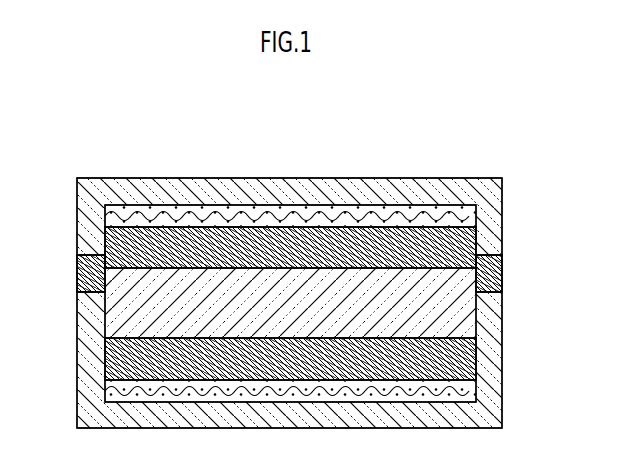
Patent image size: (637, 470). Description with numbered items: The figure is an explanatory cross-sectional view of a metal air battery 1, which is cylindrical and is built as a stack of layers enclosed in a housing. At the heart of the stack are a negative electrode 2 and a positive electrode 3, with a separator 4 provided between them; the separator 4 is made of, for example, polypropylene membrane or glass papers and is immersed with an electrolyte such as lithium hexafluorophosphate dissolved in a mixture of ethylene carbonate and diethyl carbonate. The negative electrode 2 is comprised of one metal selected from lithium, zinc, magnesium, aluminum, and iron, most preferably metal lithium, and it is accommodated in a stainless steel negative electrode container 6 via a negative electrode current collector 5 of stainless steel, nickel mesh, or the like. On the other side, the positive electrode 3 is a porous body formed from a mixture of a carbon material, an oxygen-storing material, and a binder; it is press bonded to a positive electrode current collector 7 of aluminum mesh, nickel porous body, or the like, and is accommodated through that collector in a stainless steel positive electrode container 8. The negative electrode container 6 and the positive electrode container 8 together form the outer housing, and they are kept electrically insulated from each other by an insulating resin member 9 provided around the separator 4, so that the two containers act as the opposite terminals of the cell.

The metal air battery 1 is at (543, 140).
The negative electrode 2 is at (477, 358).
The positive electrode 3 is at (478, 229).
The separator 4 is at (477, 312).
The negative electrode current collector 5 is at (477, 388).
The negative electrode container 6 is at (77, 315).
The positive electrode current collector 7 is at (478, 207).
The positive electrode container 8 is at (77, 238).
The insulating resin member 9 is at (77, 274).